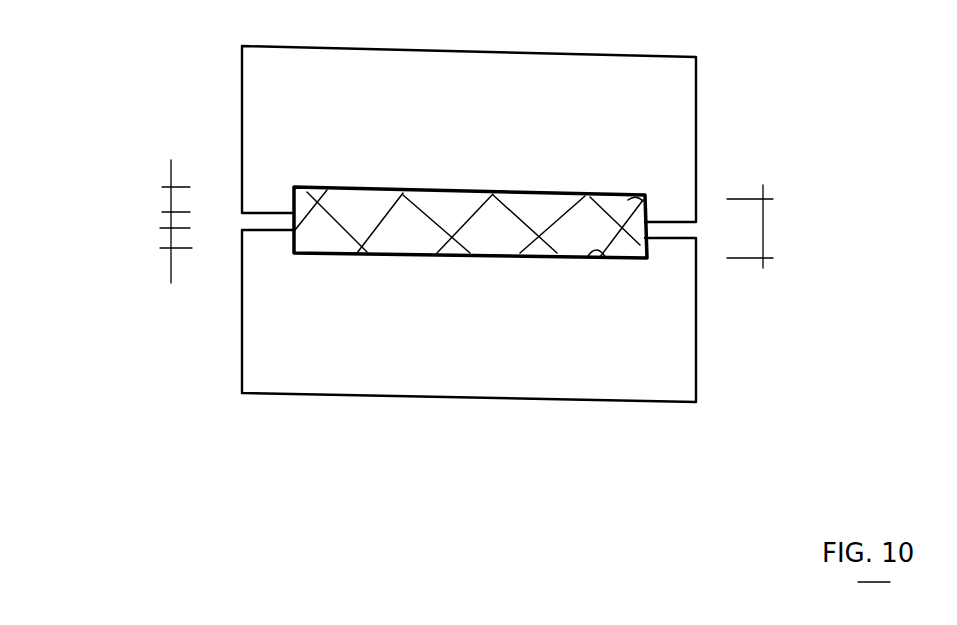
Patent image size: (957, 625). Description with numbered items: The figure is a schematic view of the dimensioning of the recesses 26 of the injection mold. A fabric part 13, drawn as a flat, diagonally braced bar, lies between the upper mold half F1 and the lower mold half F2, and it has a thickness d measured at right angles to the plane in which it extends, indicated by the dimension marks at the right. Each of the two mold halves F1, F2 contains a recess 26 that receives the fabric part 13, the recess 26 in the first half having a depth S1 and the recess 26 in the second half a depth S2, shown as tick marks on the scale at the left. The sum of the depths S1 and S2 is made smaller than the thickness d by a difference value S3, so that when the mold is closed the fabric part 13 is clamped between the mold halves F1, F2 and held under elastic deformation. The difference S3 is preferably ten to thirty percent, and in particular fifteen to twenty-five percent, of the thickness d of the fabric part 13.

The fabric part 13 is at (407, 237).
The recess 26 is at (640, 198).
The mold half F1 is at (622, 70).
The mold half F2 is at (605, 390).
The depth of recess in first mold half S1 is at (165, 186).
The depth of recess in second mold half S2 is at (165, 238).
The difference value S3 is at (170, 220).
The thickness of fabric part d is at (757, 226).